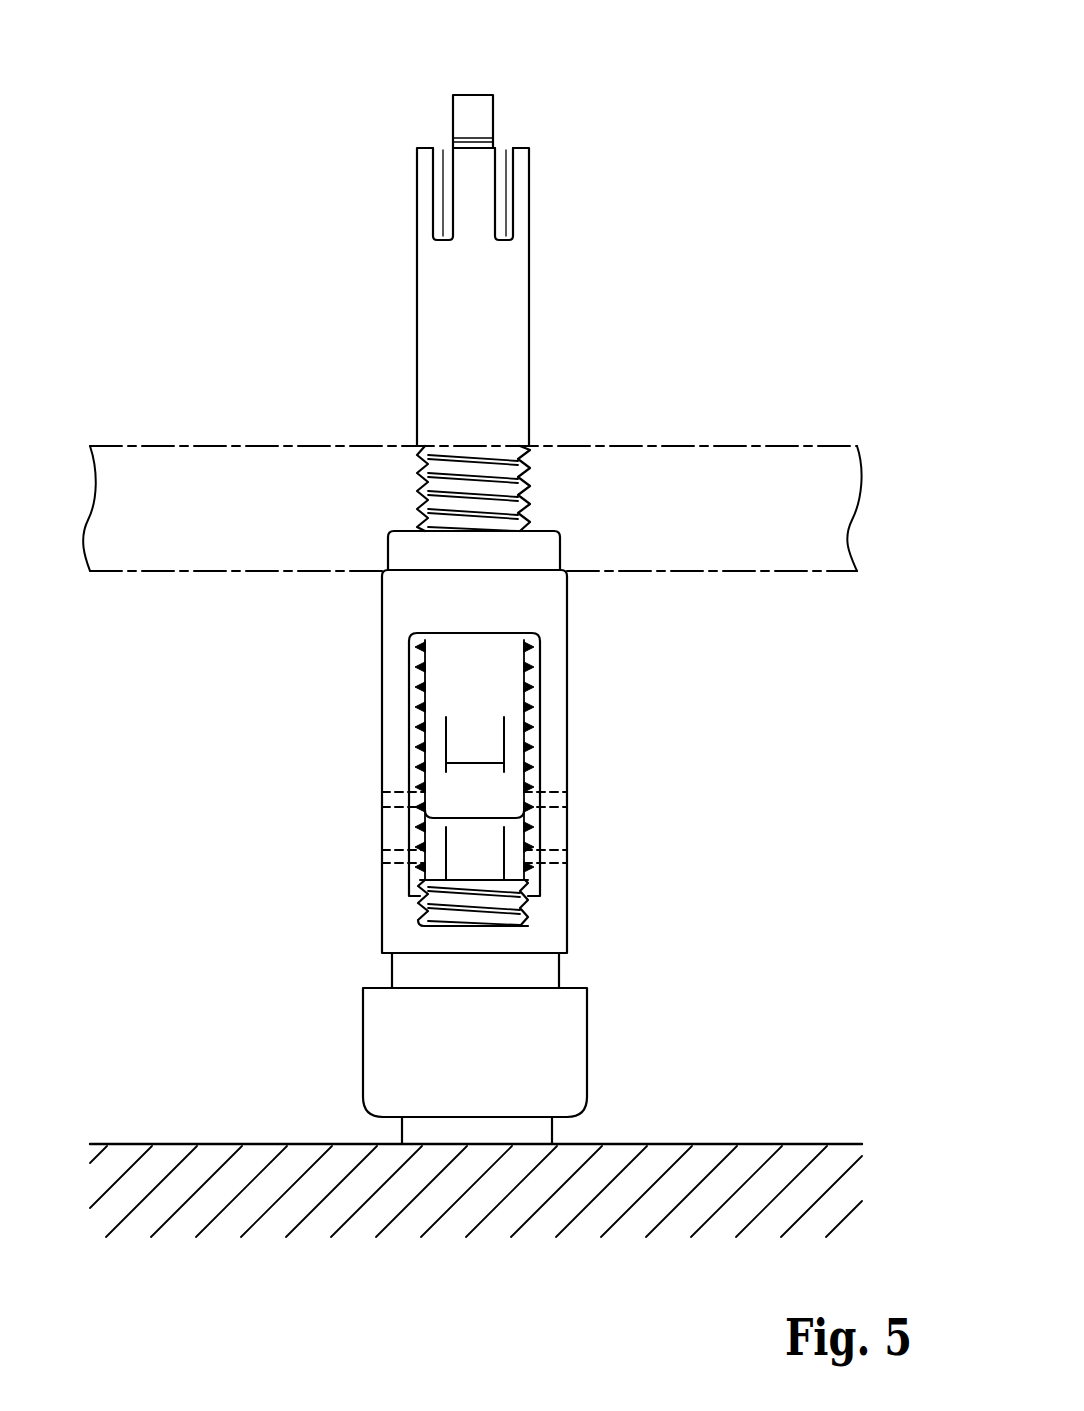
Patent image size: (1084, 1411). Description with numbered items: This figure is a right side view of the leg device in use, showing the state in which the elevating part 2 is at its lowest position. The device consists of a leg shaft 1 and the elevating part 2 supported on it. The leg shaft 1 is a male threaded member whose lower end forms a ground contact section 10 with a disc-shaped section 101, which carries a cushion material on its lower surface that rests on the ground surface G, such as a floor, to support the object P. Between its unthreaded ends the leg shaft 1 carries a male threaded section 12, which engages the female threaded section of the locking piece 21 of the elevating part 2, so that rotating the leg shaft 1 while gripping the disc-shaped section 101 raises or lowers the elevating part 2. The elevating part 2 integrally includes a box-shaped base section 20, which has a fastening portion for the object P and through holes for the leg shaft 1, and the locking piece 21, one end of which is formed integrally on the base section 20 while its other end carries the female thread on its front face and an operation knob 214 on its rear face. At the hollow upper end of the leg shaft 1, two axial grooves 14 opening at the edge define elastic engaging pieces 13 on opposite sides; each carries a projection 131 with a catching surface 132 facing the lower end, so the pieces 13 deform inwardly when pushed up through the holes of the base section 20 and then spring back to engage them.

The leg shaft 1 is at (487, 290).
The male threaded section 12 is at (505, 512).
The elastic engaging pieces 13 is at (466, 228).
The projection 131 is at (480, 110).
The catching surface 132 is at (472, 152).
The grooves 14 is at (443, 157).
The elevating part 2 is at (549, 761).
The base section 20 is at (567, 758).
The locking piece 21 is at (494, 693).
The operation knob 214 is at (495, 805).
The ground contact section 10 is at (547, 1048).
The disc-shaped section 101 is at (568, 1088).
The object P is at (780, 473).
The ground surface G is at (802, 1142).